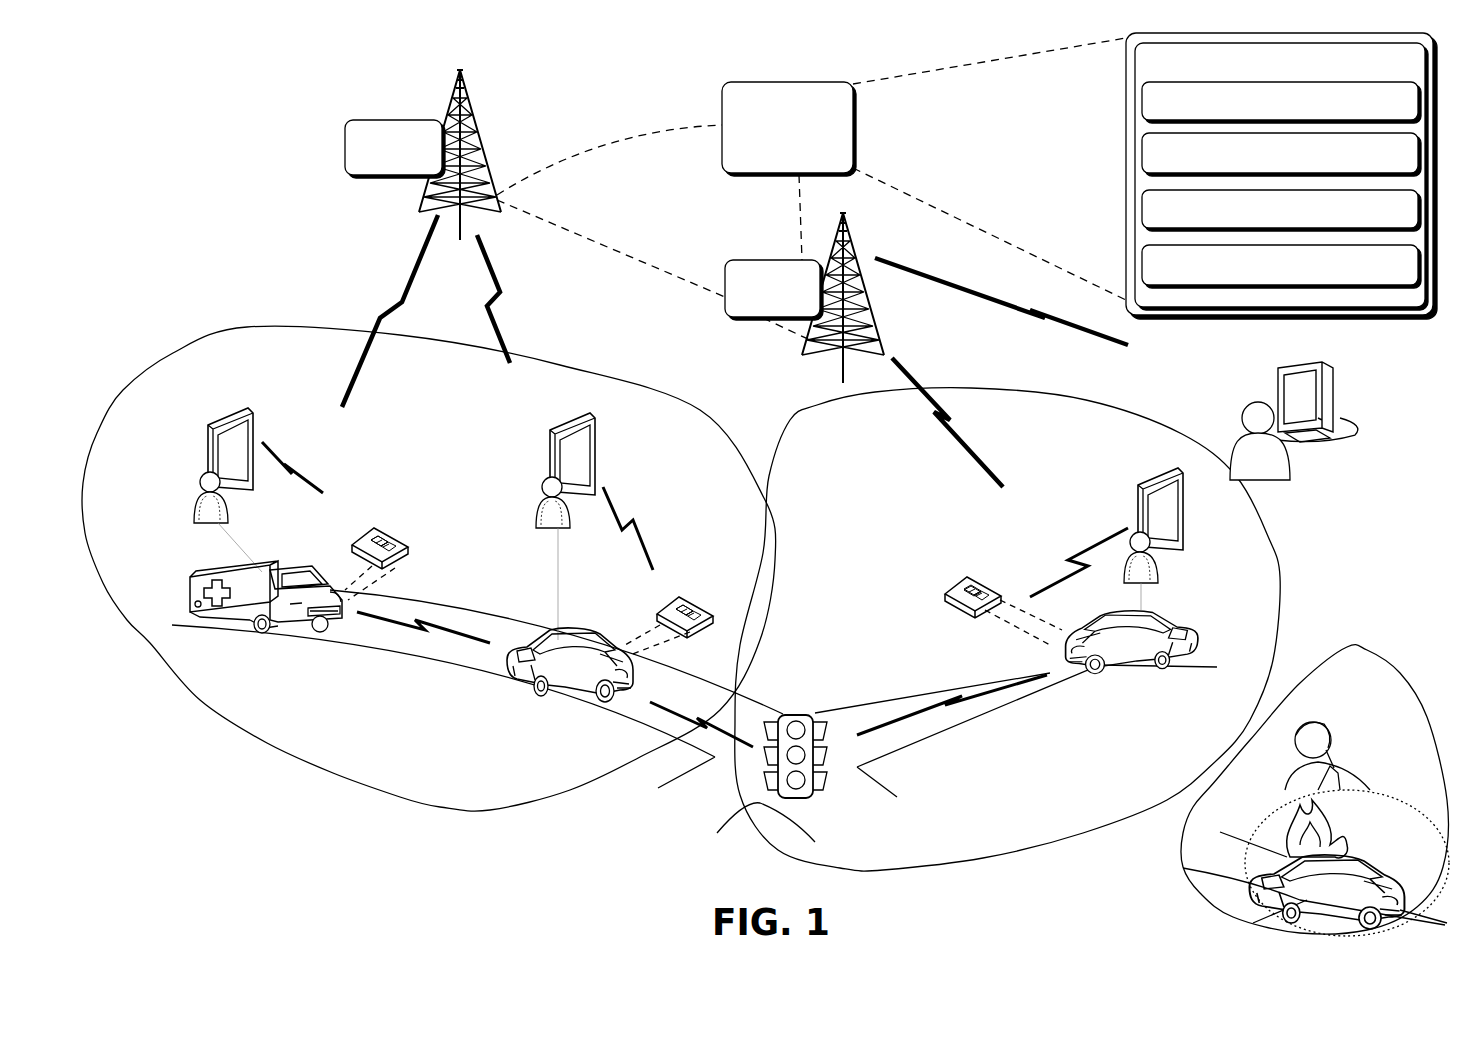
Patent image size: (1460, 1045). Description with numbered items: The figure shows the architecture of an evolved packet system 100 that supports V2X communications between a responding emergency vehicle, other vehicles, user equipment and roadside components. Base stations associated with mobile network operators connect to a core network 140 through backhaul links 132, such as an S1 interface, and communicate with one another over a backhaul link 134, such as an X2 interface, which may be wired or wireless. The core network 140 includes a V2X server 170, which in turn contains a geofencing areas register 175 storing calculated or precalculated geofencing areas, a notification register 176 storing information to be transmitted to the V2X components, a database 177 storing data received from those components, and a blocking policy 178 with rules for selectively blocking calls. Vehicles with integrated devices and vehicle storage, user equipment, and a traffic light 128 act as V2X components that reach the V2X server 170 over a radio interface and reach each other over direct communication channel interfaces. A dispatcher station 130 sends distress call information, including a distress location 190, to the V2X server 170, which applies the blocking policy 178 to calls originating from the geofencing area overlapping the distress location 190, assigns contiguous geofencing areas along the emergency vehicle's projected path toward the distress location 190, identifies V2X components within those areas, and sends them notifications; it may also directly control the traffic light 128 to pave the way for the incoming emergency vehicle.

The evolved packet system 100 is at (163, 72).
The traffic light 128 is at (801, 715).
The dispatcher station 130 is at (1280, 376).
The backhaul link 132 is at (705, 127).
The backhaul link 134 is at (640, 268).
The core network 140 is at (789, 129).
The V2X server 170 is at (1240, 176).
The geofencing areas register 175 is at (1281, 102).
The notification register 176 is at (1281, 154).
The database 177 is at (1281, 210).
The blocking policy 178 is at (1281, 266).
The distress location 190 is at (1190, 833).